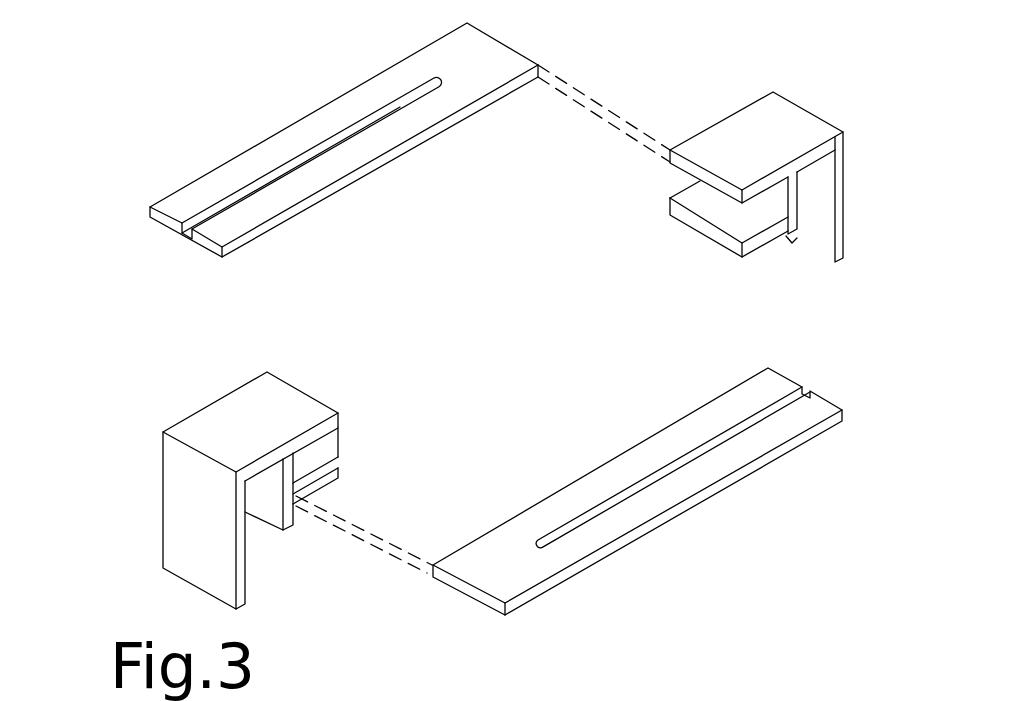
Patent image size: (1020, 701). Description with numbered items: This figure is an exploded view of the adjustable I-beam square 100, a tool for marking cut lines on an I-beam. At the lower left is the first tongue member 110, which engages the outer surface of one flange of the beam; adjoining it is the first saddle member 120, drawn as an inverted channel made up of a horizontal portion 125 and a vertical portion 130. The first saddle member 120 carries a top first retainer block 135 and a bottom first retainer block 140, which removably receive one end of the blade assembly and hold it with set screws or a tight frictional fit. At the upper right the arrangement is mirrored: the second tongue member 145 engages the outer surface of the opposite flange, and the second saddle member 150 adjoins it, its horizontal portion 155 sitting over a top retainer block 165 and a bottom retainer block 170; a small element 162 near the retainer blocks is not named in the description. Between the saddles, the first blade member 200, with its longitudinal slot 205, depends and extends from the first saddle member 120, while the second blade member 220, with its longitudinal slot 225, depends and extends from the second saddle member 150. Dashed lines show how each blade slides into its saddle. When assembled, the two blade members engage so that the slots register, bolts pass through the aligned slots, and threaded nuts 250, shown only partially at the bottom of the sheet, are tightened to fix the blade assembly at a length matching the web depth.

The adjustable I-beam square 100 is at (118, 118).
The first tongue member 110 is at (188, 536).
The first saddle member 120 is at (217, 384).
The horizontal portion 125 is at (263, 415).
The vertical portion 130 is at (273, 503).
The top first retainer block 135 is at (333, 450).
The bottom first retainer block 140 is at (333, 479).
The second tongue member 145 is at (843, 213).
The second saddle member 150 is at (726, 104).
The horizontal portion 155 is at (774, 134).
The retaining tab 162 is at (786, 235).
The top retainer block 165 is at (686, 182).
The bottom retainer block 170 is at (700, 227).
The first blade member 200 is at (537, 520).
The longitudinal slot 205 is at (723, 437).
The second blade member 220 is at (362, 100).
The longitudinal slot 225 is at (281, 162).
The threaded nuts 250 is at (415, 692).